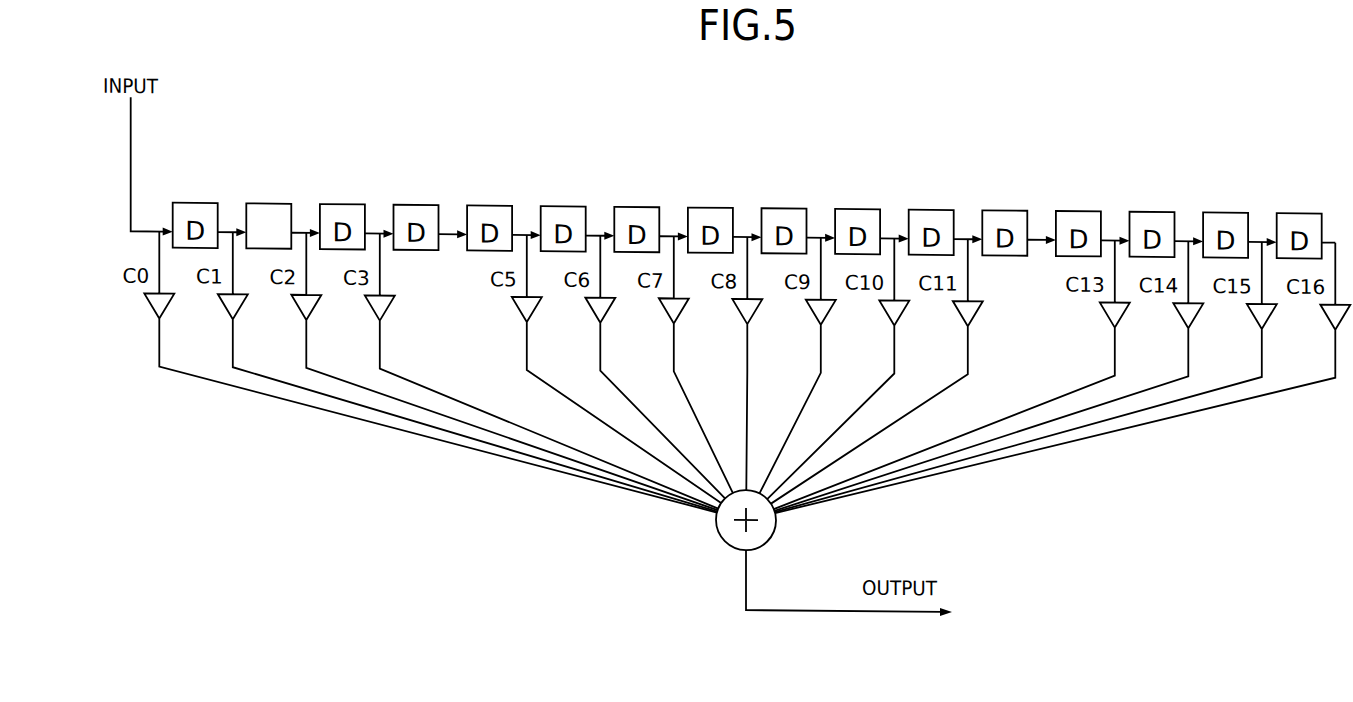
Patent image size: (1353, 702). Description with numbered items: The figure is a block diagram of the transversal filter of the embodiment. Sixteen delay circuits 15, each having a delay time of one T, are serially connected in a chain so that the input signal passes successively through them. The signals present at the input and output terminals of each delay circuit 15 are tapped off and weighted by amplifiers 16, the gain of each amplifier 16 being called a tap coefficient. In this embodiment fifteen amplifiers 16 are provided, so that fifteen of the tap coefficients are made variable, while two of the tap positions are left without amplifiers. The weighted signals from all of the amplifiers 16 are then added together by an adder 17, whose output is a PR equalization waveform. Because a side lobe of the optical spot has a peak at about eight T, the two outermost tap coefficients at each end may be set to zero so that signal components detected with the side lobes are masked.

The delay circuit 15 is at (272, 201).
The amplifier 16 is at (151, 305).
The adder 17 is at (724, 522).